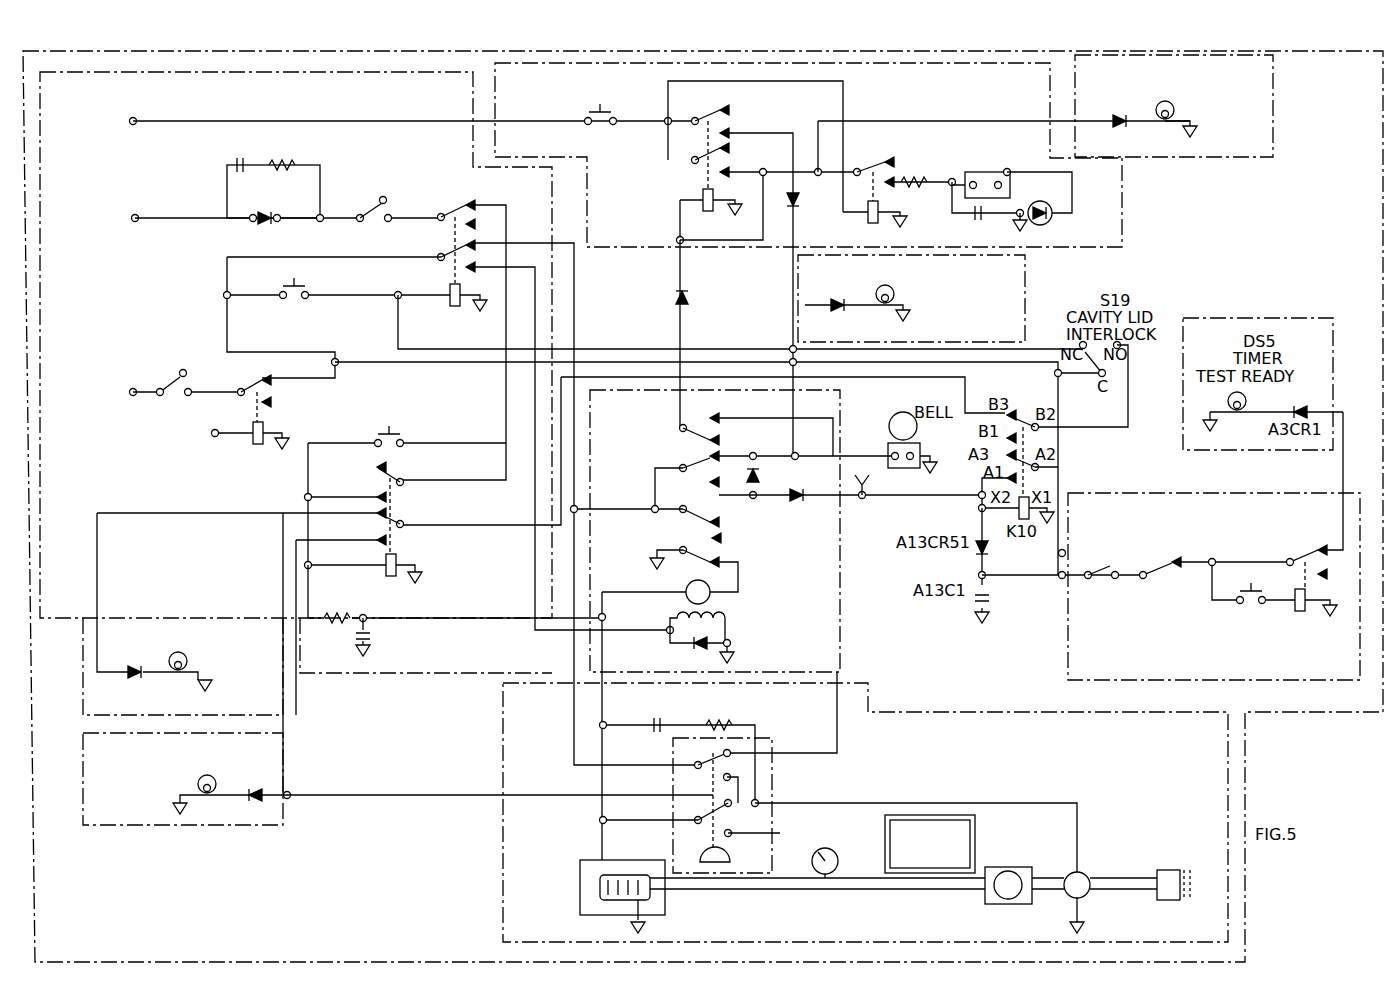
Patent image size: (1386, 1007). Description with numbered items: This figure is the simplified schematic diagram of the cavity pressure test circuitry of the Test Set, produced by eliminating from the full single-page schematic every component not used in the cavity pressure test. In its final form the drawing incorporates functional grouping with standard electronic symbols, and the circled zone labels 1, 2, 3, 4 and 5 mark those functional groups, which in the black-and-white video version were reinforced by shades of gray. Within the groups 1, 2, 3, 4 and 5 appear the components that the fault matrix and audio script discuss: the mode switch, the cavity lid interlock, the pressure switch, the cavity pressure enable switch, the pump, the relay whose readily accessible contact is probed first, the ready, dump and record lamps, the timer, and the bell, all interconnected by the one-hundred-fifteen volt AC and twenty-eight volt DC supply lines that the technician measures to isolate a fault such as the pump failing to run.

The zone 1 cavity pressure ready circuit 1 is at (615, 476).
The zone 2 alarm reset circuit 2 is at (884, 255).
The zone 3 timer circuit 3 is at (777, 625).
The zone 4 M2 timer circuit 4 is at (1171, 546).
The zone 5 solenoid dump valve and pump circuit 5 is at (865, 807).